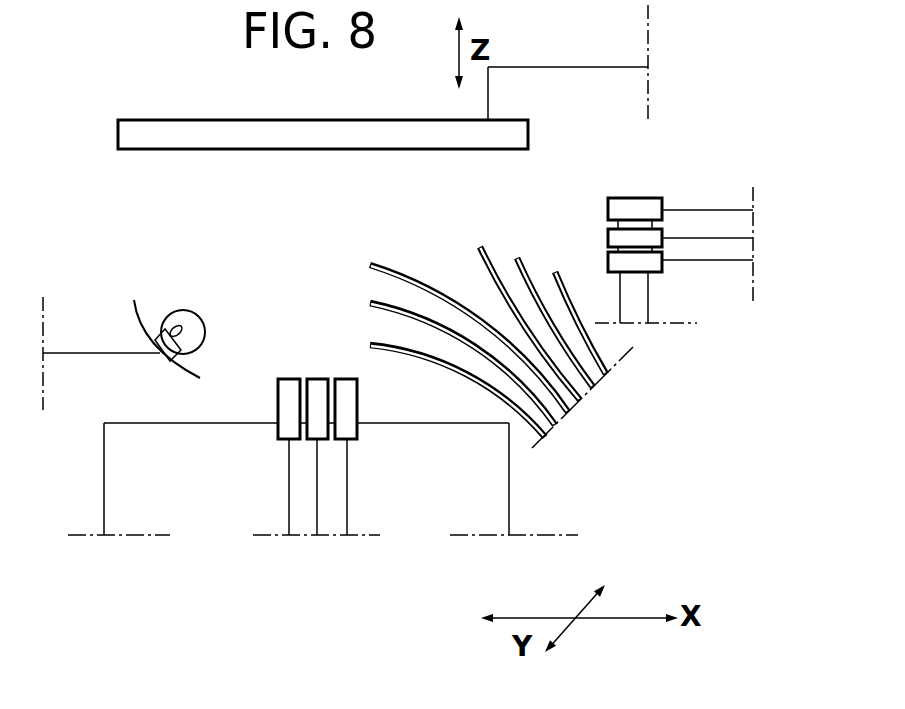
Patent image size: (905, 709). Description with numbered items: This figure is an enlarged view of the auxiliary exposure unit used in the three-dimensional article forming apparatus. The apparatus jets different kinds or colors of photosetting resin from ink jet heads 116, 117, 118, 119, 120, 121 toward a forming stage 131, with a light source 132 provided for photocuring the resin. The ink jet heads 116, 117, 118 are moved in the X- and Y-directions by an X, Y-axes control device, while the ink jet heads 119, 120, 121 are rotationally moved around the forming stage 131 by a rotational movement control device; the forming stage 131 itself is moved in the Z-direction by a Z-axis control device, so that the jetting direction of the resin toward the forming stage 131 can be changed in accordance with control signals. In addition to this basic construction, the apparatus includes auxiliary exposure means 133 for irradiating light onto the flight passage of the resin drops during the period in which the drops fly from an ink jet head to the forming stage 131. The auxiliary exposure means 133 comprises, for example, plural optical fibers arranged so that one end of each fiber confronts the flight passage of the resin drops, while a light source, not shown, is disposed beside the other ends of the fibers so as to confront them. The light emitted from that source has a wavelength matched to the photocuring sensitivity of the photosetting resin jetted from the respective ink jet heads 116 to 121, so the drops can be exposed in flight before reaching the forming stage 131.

The ink jet head 116 is at (282, 400).
The ink jet head 117 is at (316, 385).
The ink jet head 118 is at (347, 403).
The ink jet head 119 is at (609, 262).
The ink jet head 120 is at (609, 238).
The ink jet head 121 is at (632, 204).
The forming stage 131 is at (208, 128).
The light source 132 is at (141, 322).
The auxiliary exposure means 133 is at (606, 376).